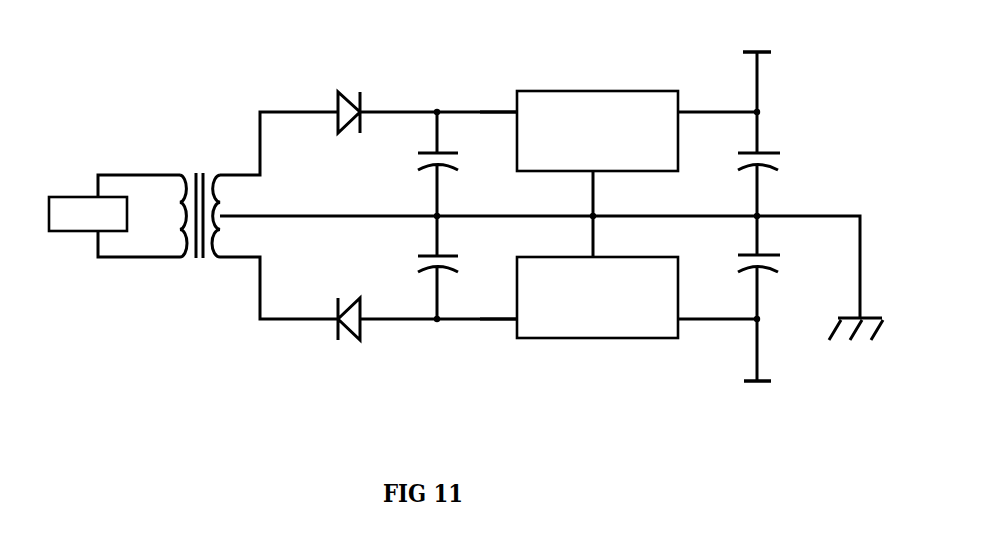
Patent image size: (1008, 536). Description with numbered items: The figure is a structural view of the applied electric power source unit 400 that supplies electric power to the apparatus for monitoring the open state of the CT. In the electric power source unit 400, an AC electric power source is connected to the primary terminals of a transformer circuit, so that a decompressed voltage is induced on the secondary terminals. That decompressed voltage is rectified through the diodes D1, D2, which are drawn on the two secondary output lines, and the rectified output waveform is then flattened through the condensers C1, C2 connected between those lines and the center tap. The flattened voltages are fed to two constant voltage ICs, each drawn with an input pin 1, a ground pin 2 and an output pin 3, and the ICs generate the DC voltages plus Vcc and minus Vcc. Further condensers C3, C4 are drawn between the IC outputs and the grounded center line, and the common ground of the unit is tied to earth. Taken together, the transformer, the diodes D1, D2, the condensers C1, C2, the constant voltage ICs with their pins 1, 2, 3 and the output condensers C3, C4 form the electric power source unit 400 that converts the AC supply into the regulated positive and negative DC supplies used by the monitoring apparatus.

The electric power source unit 400 is at (182, 64).
The regulator input pin Vin 1 is at (498, 208).
The regulator ground pin GND 2 is at (585, 214).
The regulator output pin Vout 3 is at (717, 208).
The diode D1 is at (349, 104).
The diode D2 is at (349, 312).
The condenser C1 is at (449, 164).
The condenser C2 is at (449, 267).
The capacitor C3 is at (769, 173).
The capacitor C4 is at (769, 256).